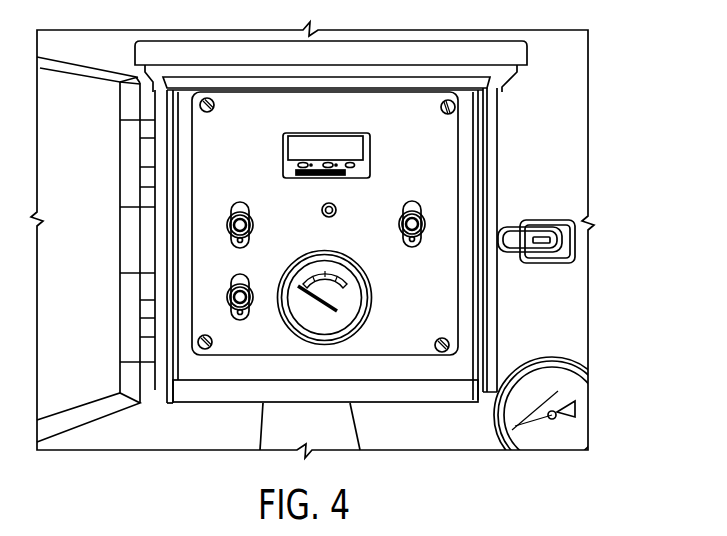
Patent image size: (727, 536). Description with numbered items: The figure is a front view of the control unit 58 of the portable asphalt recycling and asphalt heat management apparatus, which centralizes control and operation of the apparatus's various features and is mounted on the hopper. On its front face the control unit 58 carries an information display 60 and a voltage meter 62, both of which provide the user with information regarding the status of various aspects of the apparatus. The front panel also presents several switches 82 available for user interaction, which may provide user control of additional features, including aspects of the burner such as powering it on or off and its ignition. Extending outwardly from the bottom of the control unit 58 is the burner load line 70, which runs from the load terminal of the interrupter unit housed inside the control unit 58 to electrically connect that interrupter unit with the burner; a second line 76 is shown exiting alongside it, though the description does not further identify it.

The control unit 58 is at (493, 132).
The information display 60 is at (366, 175).
The voltage meter 62 is at (353, 300).
The burner load line 70 is at (357, 425).
The conduit 76 is at (261, 422).
The switches 82 is at (231, 214).